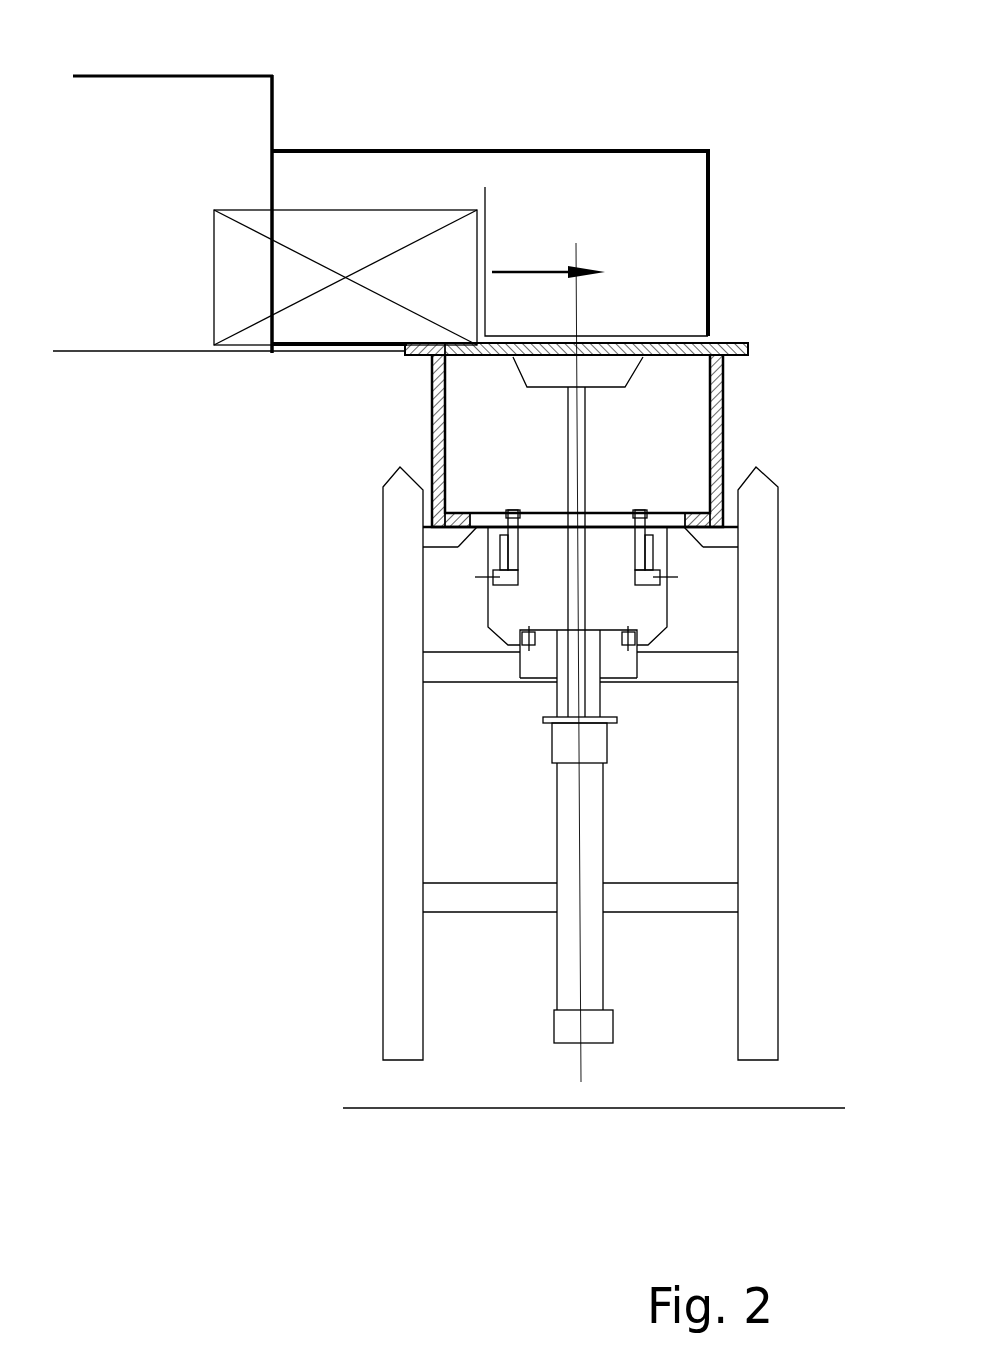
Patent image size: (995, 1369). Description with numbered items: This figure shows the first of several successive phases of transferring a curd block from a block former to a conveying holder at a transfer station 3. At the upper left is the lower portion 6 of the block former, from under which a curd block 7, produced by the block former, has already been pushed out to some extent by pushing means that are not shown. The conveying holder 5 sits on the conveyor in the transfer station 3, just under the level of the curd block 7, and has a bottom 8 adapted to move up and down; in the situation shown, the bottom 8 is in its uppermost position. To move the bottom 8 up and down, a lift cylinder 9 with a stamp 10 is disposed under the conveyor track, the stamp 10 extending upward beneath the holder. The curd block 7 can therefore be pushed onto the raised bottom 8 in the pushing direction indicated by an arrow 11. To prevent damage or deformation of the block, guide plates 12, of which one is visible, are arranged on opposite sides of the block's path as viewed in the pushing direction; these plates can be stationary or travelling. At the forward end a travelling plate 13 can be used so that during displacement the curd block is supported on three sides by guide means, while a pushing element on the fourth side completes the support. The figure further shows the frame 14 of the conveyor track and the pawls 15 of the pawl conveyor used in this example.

The transfer station 3 is at (553, 115).
The conveying holder 5 is at (745, 399).
The lower portion of the block former 6 is at (184, 159).
The curd block 7 is at (455, 254).
The bottom 8 is at (687, 343).
The lift cylinder 9 is at (590, 817).
The stamp 10 is at (608, 370).
The arrow 11 is at (547, 268).
The guide plate 12 is at (692, 195).
The travelling plate 13 is at (485, 218).
The frame 14 is at (762, 852).
The pawls 15 is at (522, 558).